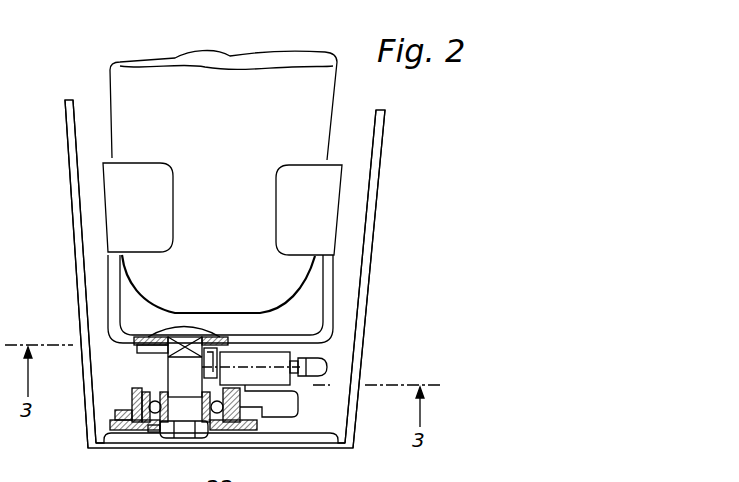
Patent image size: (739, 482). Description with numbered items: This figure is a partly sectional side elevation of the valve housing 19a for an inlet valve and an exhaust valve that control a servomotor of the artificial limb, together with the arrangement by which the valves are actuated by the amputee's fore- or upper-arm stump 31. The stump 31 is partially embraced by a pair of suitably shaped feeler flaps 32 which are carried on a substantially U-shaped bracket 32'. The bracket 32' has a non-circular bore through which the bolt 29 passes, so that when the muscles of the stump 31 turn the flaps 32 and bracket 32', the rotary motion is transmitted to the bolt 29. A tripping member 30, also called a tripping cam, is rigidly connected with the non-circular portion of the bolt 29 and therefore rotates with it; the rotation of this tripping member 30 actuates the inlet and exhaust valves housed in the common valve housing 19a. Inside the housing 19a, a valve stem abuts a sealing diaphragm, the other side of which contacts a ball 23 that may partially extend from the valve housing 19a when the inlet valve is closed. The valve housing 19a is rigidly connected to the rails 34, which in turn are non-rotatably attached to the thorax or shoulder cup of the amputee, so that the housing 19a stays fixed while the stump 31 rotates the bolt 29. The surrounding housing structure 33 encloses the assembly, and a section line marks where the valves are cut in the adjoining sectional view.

The housing 33 is at (325, 426).
The rails 34 is at (80, 262).
The arm stump 31 is at (232, 152).
The feeler flaps 32 is at (222, 220).
The U-shaped bracket 32' is at (262, 299).
The tripping member 30 is at (222, 337).
The bolt 29 is at (170, 377).
The valve housing 19a is at (265, 372).
The ball 23 is at (217, 375).